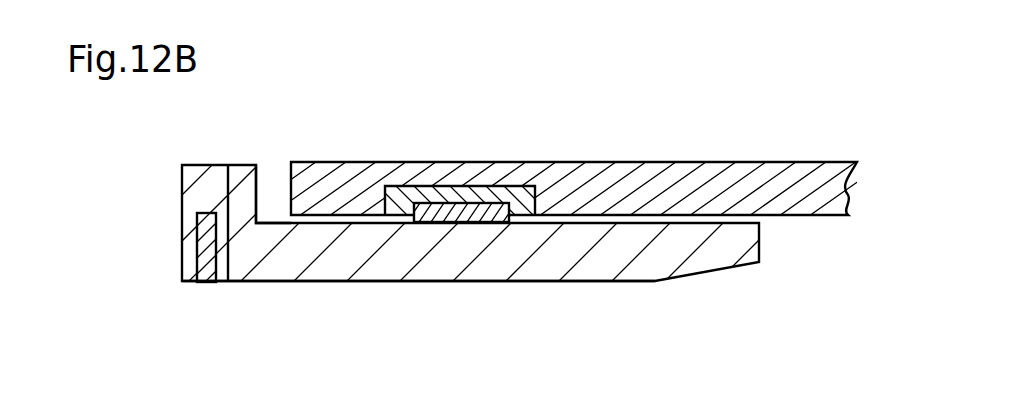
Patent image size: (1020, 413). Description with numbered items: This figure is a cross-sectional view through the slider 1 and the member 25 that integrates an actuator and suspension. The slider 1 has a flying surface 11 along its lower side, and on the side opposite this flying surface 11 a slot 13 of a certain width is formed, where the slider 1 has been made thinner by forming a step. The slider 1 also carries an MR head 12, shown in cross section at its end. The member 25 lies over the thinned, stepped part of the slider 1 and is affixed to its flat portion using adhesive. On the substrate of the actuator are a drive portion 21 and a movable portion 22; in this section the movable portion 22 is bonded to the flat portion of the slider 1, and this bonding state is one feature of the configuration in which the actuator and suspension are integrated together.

The slider 1 is at (630, 238).
The flying surface 11 is at (404, 282).
The MR head 12 is at (205, 269).
The slot 13 is at (276, 222).
The drive portion 21 is at (520, 200).
The movable portion 22 is at (468, 208).
The member 25 is at (670, 192).